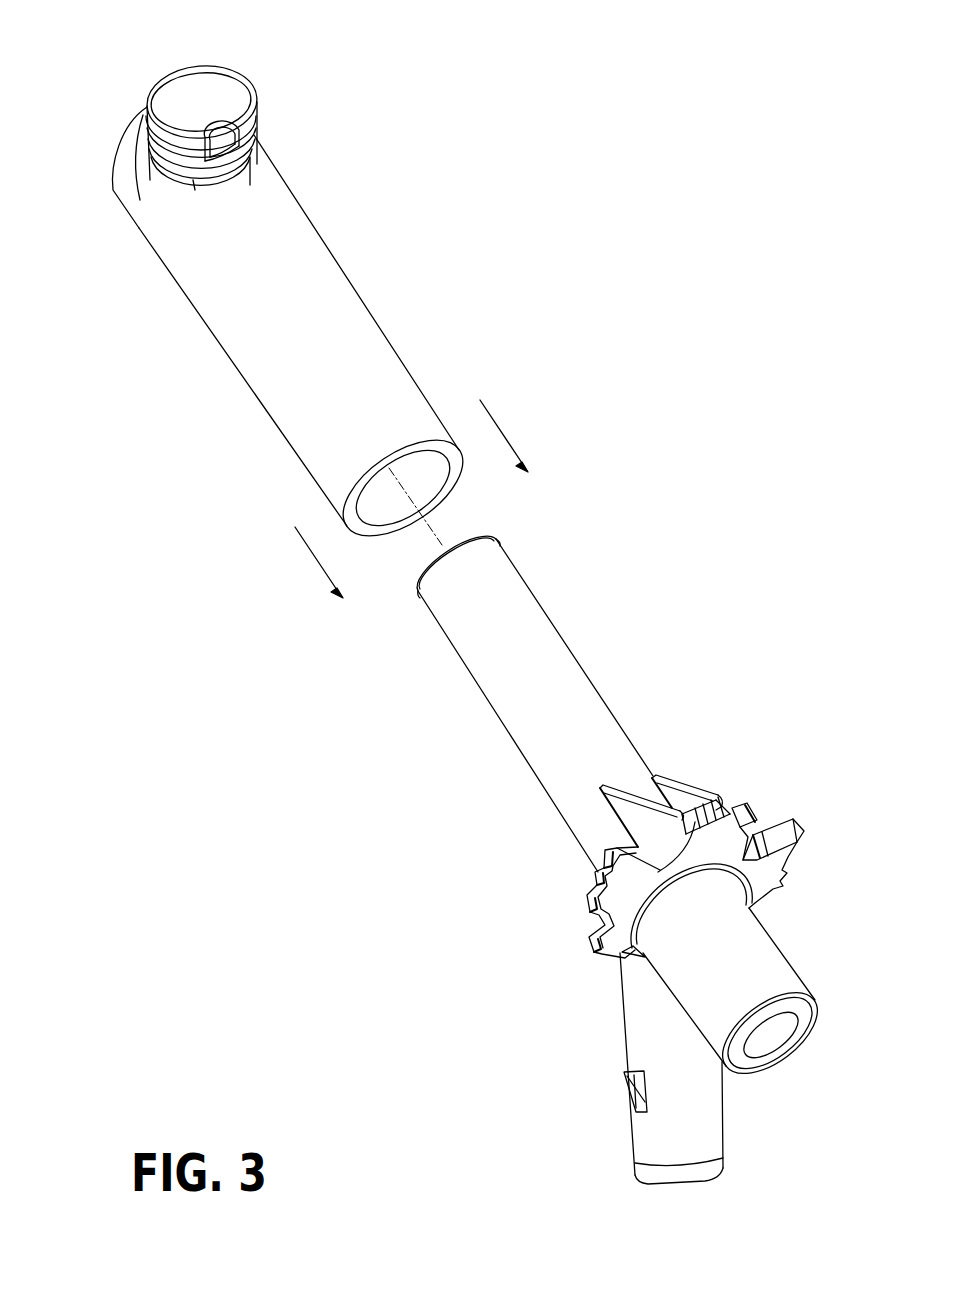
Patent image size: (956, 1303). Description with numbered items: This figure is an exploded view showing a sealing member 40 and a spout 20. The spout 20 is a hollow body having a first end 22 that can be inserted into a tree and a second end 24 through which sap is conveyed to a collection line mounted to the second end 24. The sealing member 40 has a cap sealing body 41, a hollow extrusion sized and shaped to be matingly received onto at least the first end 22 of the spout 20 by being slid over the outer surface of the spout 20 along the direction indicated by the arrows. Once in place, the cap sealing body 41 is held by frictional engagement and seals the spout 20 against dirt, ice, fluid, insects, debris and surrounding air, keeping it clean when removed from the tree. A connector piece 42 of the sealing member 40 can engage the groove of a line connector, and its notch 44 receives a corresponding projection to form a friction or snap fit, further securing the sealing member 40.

The spout 20 is at (596, 860).
The first end 22 is at (518, 573).
The second end 24 is at (632, 1134).
The sealing member 40 is at (260, 289).
The cap sealing body 41 is at (328, 320).
The connector piece 42 is at (219, 106).
The notch 44 is at (220, 138).